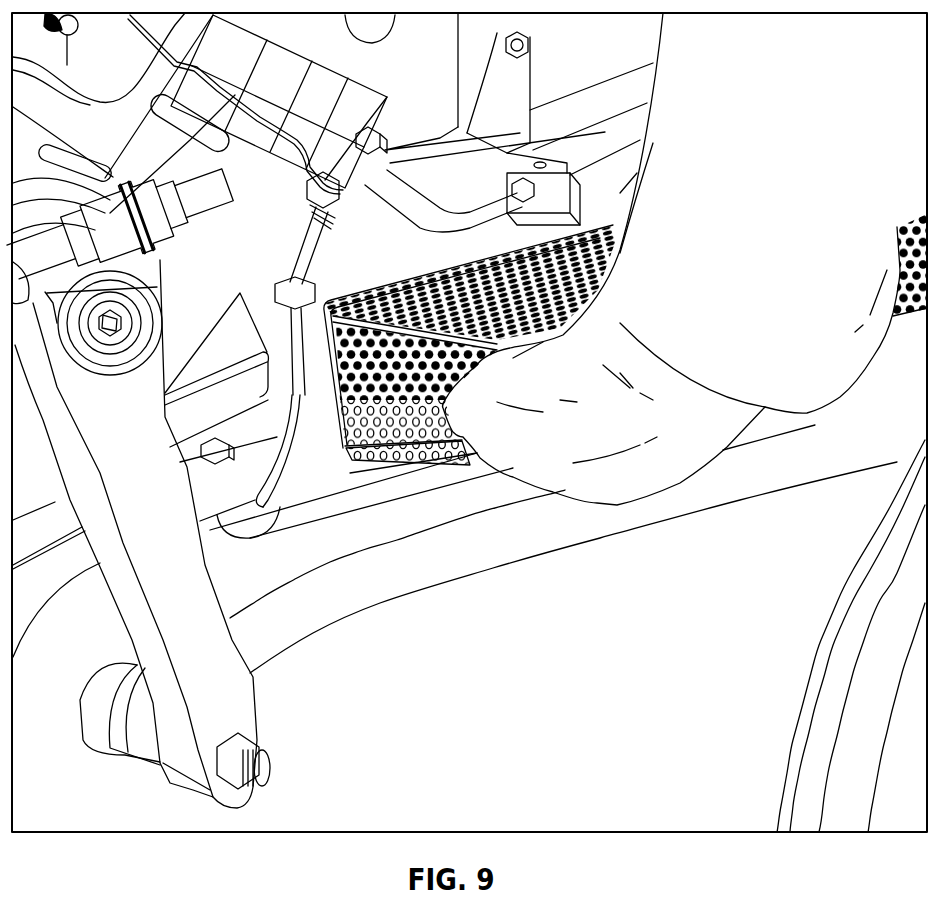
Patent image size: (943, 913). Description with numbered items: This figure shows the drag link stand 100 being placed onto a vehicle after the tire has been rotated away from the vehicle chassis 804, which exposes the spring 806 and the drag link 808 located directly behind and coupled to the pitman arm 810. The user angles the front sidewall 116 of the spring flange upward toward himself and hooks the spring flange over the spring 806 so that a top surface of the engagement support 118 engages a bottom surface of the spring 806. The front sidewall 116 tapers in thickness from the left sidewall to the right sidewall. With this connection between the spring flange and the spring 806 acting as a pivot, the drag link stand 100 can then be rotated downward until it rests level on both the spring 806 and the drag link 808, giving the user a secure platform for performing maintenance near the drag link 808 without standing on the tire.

The drag link stand 100 is at (410, 298).
The front sidewall 116 is at (360, 427).
The engagement support 118 is at (377, 450).
The vehicle chassis 804 is at (604, 103).
The spring 806 is at (277, 517).
The drag link 808 is at (385, 570).
The pitman arm 810 is at (140, 500).